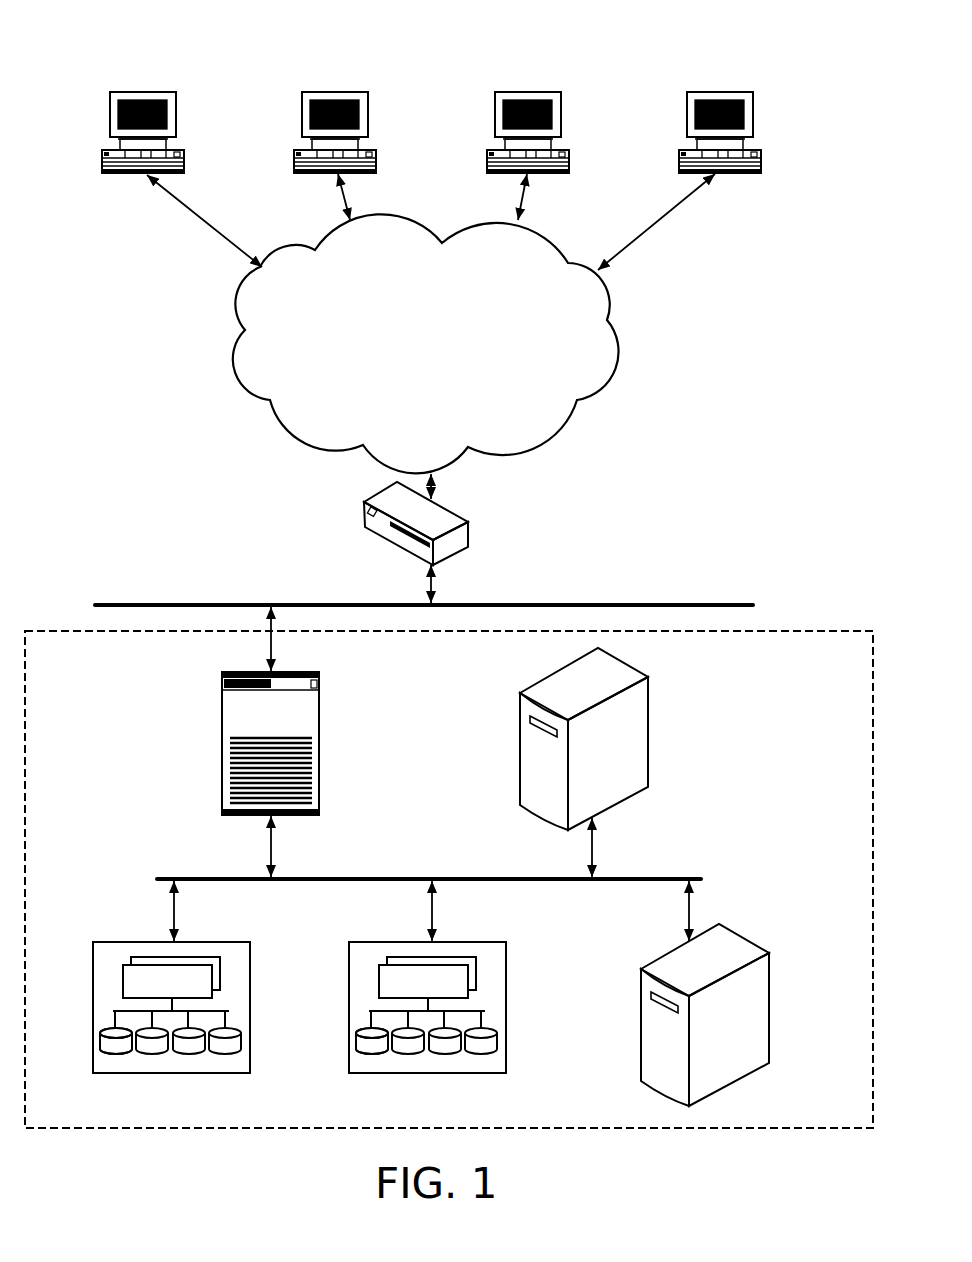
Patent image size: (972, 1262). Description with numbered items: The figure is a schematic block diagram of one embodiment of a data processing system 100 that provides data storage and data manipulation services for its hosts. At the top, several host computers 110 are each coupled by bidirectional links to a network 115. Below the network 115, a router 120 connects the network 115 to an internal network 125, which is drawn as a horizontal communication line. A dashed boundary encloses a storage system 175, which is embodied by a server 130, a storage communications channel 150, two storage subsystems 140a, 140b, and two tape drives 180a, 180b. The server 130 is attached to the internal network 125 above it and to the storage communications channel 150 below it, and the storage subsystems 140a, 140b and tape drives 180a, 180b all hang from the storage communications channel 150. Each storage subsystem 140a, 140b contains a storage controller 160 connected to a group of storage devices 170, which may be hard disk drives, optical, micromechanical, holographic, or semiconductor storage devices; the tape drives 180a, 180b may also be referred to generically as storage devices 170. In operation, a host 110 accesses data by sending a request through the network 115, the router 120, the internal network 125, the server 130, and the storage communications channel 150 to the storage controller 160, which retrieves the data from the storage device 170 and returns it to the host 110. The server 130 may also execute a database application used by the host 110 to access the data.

The data processing system 100 is at (113, 55).
The host computer 110 is at (176, 92).
The network 115 is at (406, 365).
The router 120 is at (468, 522).
The internal network 125 is at (128, 603).
The server 130 is at (320, 712).
The storage subsystem 140a is at (250, 942).
The storage subsystem 140b is at (506, 942).
The storage communications channel 150 is at (363, 878).
The storage controller 160 is at (123, 978).
The storage device 170 is at (101, 1041).
The storage system 175 is at (793, 631).
The tape drive 180a is at (648, 705).
The tape drive 180b is at (768, 975).